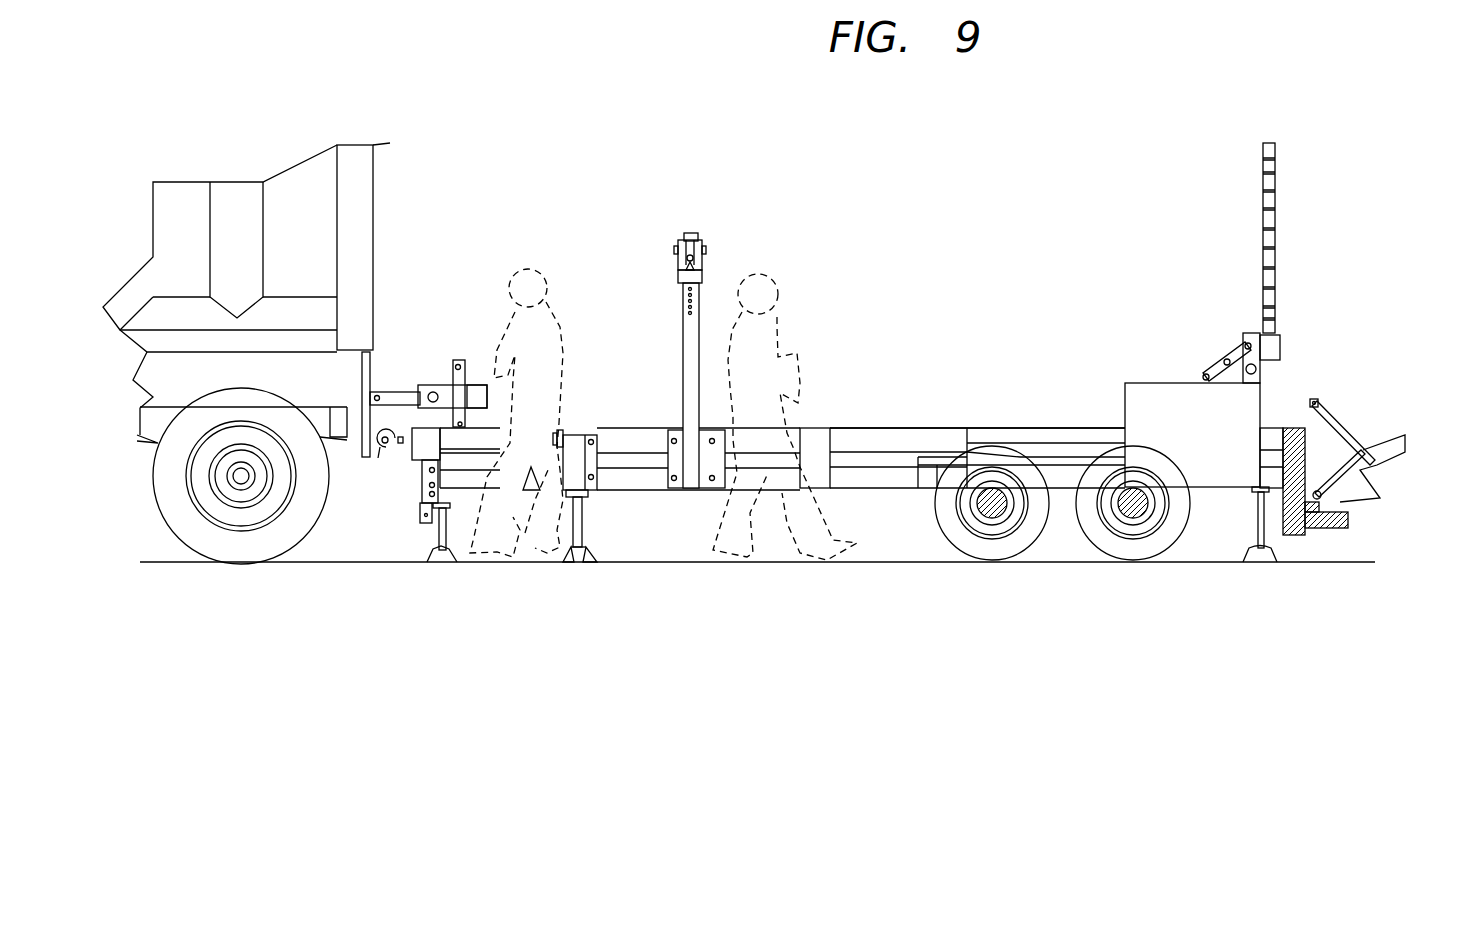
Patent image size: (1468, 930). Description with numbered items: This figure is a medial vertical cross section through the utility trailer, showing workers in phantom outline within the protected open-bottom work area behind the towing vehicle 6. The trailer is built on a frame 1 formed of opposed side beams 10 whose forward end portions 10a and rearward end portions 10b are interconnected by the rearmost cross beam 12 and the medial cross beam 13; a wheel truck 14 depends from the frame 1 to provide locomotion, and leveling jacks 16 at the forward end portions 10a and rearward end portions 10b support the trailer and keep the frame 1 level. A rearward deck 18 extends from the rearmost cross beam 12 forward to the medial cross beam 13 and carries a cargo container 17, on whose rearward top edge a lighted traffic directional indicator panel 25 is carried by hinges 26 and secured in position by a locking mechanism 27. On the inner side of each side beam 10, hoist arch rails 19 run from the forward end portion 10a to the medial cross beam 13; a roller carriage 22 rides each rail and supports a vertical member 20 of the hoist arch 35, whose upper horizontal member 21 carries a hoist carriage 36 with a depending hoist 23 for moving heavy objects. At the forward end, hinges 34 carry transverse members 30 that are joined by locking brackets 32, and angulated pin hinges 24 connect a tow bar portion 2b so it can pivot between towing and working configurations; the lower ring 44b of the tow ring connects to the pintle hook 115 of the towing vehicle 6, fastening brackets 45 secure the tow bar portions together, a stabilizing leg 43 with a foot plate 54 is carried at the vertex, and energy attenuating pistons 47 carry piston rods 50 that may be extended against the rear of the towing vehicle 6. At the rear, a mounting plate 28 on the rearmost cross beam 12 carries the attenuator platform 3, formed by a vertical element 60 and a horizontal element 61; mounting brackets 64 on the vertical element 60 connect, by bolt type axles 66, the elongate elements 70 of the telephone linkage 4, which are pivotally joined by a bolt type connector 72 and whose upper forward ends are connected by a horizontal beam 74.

The frame 1 is at (994, 420).
The tow bar portion 2b is at (457, 340).
The attenuator platform 3 is at (1362, 540).
The telephone linkage 4 is at (1358, 388).
The towing vehicle 6 is at (380, 188).
The side beams 10 is at (842, 427).
The forward end portions 10a is at (617, 458).
The rearward end portions 10b is at (1055, 440).
The rearmost cross beam 12 is at (1273, 440).
The medial cross beam 13 is at (920, 480).
The wheel truck 14 is at (1088, 572).
The leveling jacks 16 is at (580, 500).
The cargo container 17 is at (1158, 443).
The rearward deck 18 is at (948, 457).
The hoist arch rails 19 is at (648, 460).
The vertical member 20 is at (685, 347).
The upper horizontal member 21 is at (690, 237).
The roller carriage 22 is at (707, 485).
The hoist 23 is at (682, 277).
The angulated pin hinges 24 is at (560, 430).
The lighted traffic directional indicator panel 25 is at (1273, 233).
The hinges 26 is at (1257, 368).
The locking mechanism 27 is at (1217, 363).
The mounting plate 28 is at (1285, 435).
The transverse members 30 is at (487, 442).
The locking brackets 32 is at (420, 483).
The hinges 34 is at (556, 478).
The hoist arch 35 is at (670, 227).
The hoist carriage 36 is at (702, 262).
The stabilizing leg 43 is at (443, 535).
The lower ring 44b is at (372, 395).
The fastening brackets 45 is at (463, 380).
The energy attenuating pistons 47 is at (443, 427).
The piston rods 50 is at (403, 393).
The foot plate 54 is at (427, 560).
The vertical element 60 is at (1300, 528).
The horizontal element 61 is at (1353, 520).
The mounting brackets 64 is at (1330, 528).
The bolt type axles 66 is at (1318, 493).
The elongate elements 70 is at (1367, 432).
The bolt type connector 72 is at (1393, 443).
The horizontal beam 74 is at (1316, 400).
The pintle hook 115 is at (422, 465).